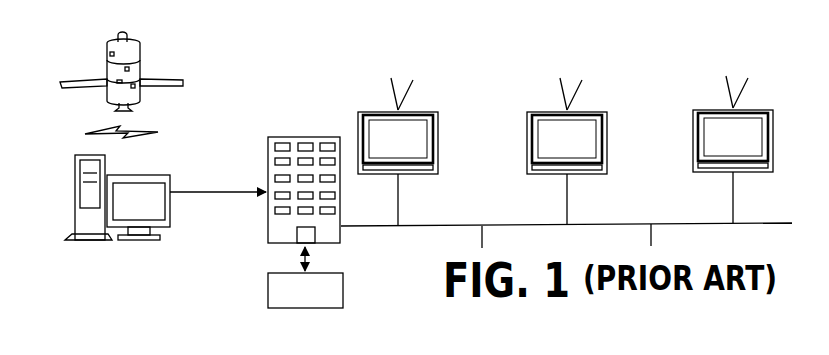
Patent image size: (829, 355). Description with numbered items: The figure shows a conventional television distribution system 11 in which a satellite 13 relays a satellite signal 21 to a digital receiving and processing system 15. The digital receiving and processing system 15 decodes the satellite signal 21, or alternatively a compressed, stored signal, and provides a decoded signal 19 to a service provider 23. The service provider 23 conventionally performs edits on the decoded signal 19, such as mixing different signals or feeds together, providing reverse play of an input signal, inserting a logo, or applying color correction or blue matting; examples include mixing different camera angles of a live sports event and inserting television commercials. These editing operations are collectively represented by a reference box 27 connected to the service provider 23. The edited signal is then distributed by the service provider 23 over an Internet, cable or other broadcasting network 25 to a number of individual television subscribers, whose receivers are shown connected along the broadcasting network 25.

The television distribution system 11 is at (271, 98).
The satellite 13 is at (140, 65).
The digital receiving and processing system 15 is at (90, 240).
The decoded signal 19 is at (222, 192).
The satellite signal 21 is at (117, 132).
The service provider 23 is at (268, 170).
The broadcasting network 25 is at (452, 227).
The reference box 27 is at (268, 275).